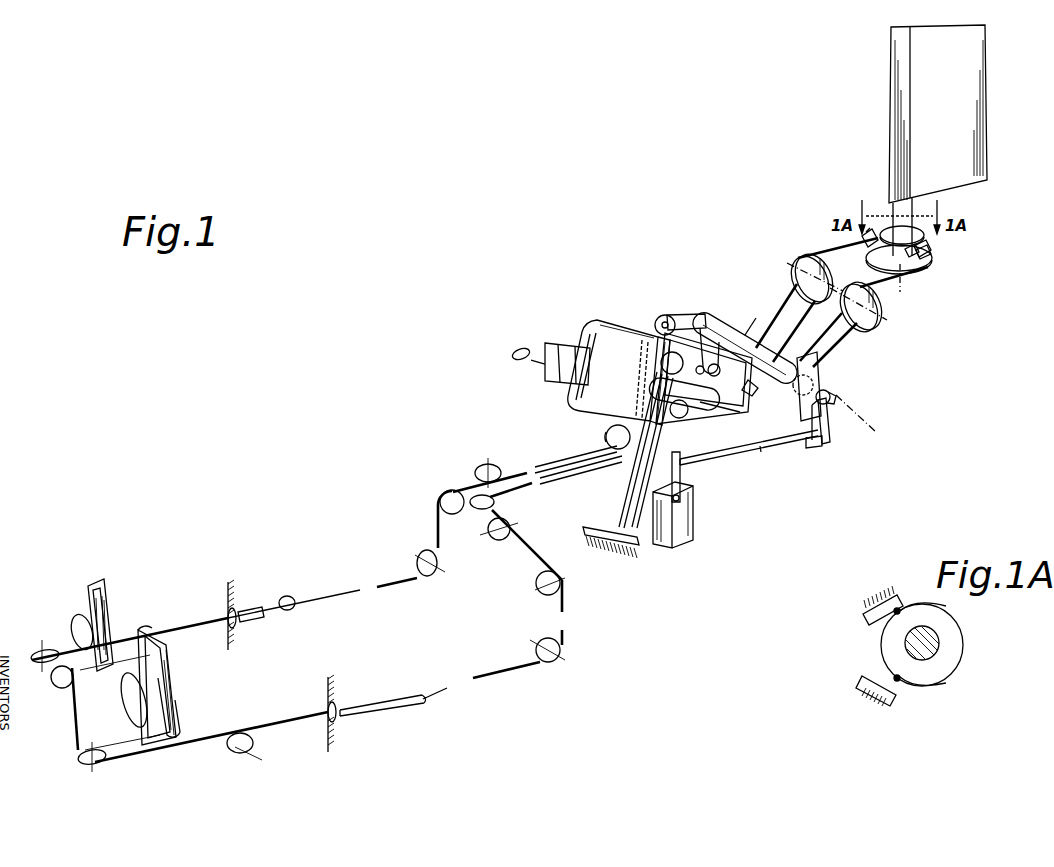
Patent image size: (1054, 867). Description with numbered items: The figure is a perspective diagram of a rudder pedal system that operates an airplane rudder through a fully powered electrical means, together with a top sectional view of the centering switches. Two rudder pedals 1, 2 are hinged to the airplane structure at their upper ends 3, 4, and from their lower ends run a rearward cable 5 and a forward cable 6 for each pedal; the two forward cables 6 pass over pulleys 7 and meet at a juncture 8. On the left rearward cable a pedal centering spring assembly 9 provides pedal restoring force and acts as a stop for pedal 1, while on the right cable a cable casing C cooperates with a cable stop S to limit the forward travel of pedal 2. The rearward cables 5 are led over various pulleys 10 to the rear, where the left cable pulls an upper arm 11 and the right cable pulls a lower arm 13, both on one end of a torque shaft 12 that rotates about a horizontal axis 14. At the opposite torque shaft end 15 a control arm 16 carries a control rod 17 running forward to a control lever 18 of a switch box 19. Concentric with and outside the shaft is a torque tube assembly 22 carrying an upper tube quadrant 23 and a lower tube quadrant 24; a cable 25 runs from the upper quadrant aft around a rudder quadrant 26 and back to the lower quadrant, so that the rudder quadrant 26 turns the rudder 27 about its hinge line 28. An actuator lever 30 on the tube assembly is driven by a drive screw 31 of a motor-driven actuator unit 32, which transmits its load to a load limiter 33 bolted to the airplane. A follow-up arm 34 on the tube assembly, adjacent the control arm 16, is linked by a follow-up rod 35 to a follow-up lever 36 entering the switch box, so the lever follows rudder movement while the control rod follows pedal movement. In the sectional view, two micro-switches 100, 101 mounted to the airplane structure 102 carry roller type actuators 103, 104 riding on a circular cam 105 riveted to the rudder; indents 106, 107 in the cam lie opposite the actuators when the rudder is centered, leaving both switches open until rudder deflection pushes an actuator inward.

In FIG. 1, the rudder pedal 1 is at (172, 712).
In FIG. 1, the rudder pedal 2 is at (78, 615).
In FIG. 1, the upper end 3 is at (170, 650).
In FIG. 1, the upper end 4 is at (113, 590).
In FIG. 1, the rearward cable 5 is at (215, 625).
In FIG. 1, the forward cable 6 is at (118, 755).
In FIG. 1, the pulley 7 is at (40, 664).
In FIG. 1, the juncture 8 is at (75, 715).
In FIG. 1, the pedal centering spring assembly 9 is at (385, 705).
In FIG. 1, the pulley 10 is at (497, 468).
In FIG. 1, the upper arm 11 is at (690, 320).
In FIG. 1, the torque shaft 12 is at (712, 322).
In FIG. 1, the lower arm 13 is at (658, 330).
In FIG. 1, the axis 14 is at (876, 432).
In FIG. 1, the torque shaft end 15 is at (830, 398).
In FIG. 1, the control arm 16 is at (826, 446).
In FIG. 1, the control rod 17 is at (810, 452).
In FIG. 1, the control lever 18 is at (680, 478).
In FIG. 1, the switch box 19 is at (693, 525).
In FIG. 1, the torque tube assembly 22 is at (772, 355).
In FIG. 1, the upper tube quadrant 23 is at (818, 368).
In FIG. 1, the lower tube quadrant 24 is at (700, 376).
In FIG. 1, the cable 25 is at (775, 292).
In FIG. 1, the rudder quadrant 26 is at (923, 264).
In FIG. 1, the rudder 27 is at (938, 140).
In FIG. 1, the hinge line 28 is at (912, 306).
In FIG. 1, the actuator lever 30 is at (756, 394).
In FIG. 1, the drive screw 31 is at (710, 413).
In FIG. 1, the motor-driven actuator unit 32 is at (619, 372).
In FIG. 1, the load limiter 33 is at (548, 370).
In FIG. 1, the follow-up arm 34 is at (828, 425).
In FIG. 1, the follow-up rod 35 is at (756, 448).
In FIG. 1, the follow-up lever 36 is at (680, 418).
In FIG. 1, the micro-switch 100 is at (862, 240).
In FIG. 1A, the micro-switch 100 is at (863, 612).
In FIG. 1, the micro-switch 101 is at (932, 262).
In FIG. 1A, the micro-switch 101 is at (860, 676).
In FIG. 1A, the airplane structure 102 is at (868, 590).
In FIG. 1A, the roller type actuator 103 is at (896, 614).
In FIG. 1A, the roller type actuator 104 is at (898, 682).
In FIG. 1, the circular cam 105 is at (930, 243).
In FIG. 1A, the circular cam 105 is at (950, 645).
In FIG. 1, the indent 106 is at (886, 230).
In FIG. 1A, the indent 106 is at (936, 604).
In FIG. 1, the indent 107 is at (918, 240).
In FIG. 1A, the indent 107 is at (940, 680).
In FIG. 1, the cable casing C is at (250, 608).
In FIG. 1, the cable stop S is at (290, 598).